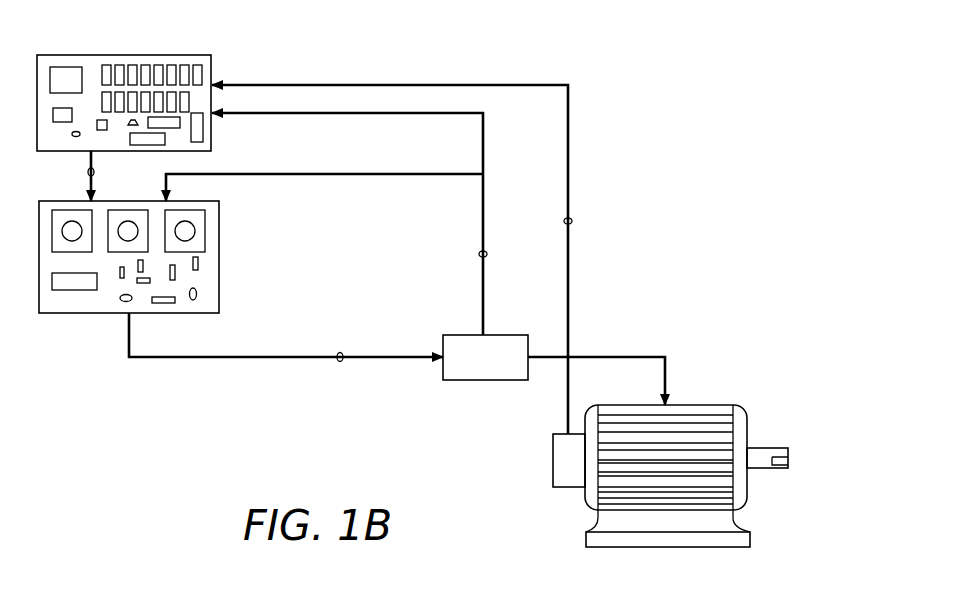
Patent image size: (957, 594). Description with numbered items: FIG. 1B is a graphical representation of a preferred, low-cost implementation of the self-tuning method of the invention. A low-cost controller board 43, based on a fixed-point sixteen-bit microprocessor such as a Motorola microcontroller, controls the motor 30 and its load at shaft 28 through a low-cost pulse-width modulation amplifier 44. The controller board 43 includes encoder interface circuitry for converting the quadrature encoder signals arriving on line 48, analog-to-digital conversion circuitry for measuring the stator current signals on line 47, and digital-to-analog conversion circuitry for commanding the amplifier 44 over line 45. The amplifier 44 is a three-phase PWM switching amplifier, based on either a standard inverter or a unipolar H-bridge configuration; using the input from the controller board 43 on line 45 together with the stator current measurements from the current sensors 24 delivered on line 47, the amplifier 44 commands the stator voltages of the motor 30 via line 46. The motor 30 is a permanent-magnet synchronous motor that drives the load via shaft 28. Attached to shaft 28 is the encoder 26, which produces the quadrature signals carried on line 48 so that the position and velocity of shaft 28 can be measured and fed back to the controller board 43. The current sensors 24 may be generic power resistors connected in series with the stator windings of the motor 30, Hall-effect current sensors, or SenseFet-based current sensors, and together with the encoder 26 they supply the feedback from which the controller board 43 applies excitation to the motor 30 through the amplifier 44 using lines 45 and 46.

The controller board 43 is at (108, 55).
The pulse-width modulation amplifier 44 is at (72, 313).
The line 45 is at (88, 172).
The line 46 is at (340, 353).
The line 47 is at (479, 254).
The line 48 is at (572, 221).
The current sensors 24 is at (482, 380).
The encoder 26 is at (553, 462).
The motor 30 is at (707, 405).
The shaft 28 is at (767, 448).